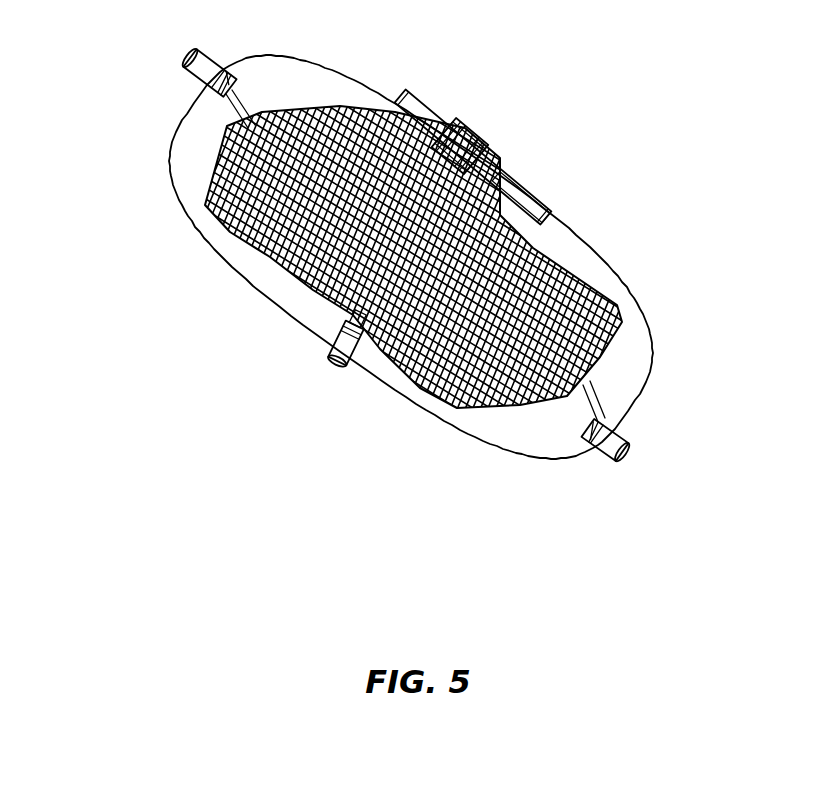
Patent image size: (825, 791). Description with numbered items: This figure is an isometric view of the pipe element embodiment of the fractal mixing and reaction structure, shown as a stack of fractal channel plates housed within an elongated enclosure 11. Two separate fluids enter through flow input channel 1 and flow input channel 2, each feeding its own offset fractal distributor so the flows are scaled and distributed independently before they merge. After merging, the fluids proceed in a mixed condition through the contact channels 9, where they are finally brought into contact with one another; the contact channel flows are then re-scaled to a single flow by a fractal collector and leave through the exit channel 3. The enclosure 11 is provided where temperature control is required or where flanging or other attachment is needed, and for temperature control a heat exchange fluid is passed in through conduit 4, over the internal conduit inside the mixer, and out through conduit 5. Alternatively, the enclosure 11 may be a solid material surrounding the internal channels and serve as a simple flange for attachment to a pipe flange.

The flow input channel 1 is at (437, 103).
The flow input channel 2 is at (527, 190).
The exit channel 3 is at (347, 373).
The conduit 4 is at (613, 467).
The conduit 5 is at (185, 67).
The contact channels 9 is at (590, 358).
The enclosure 11 is at (620, 268).